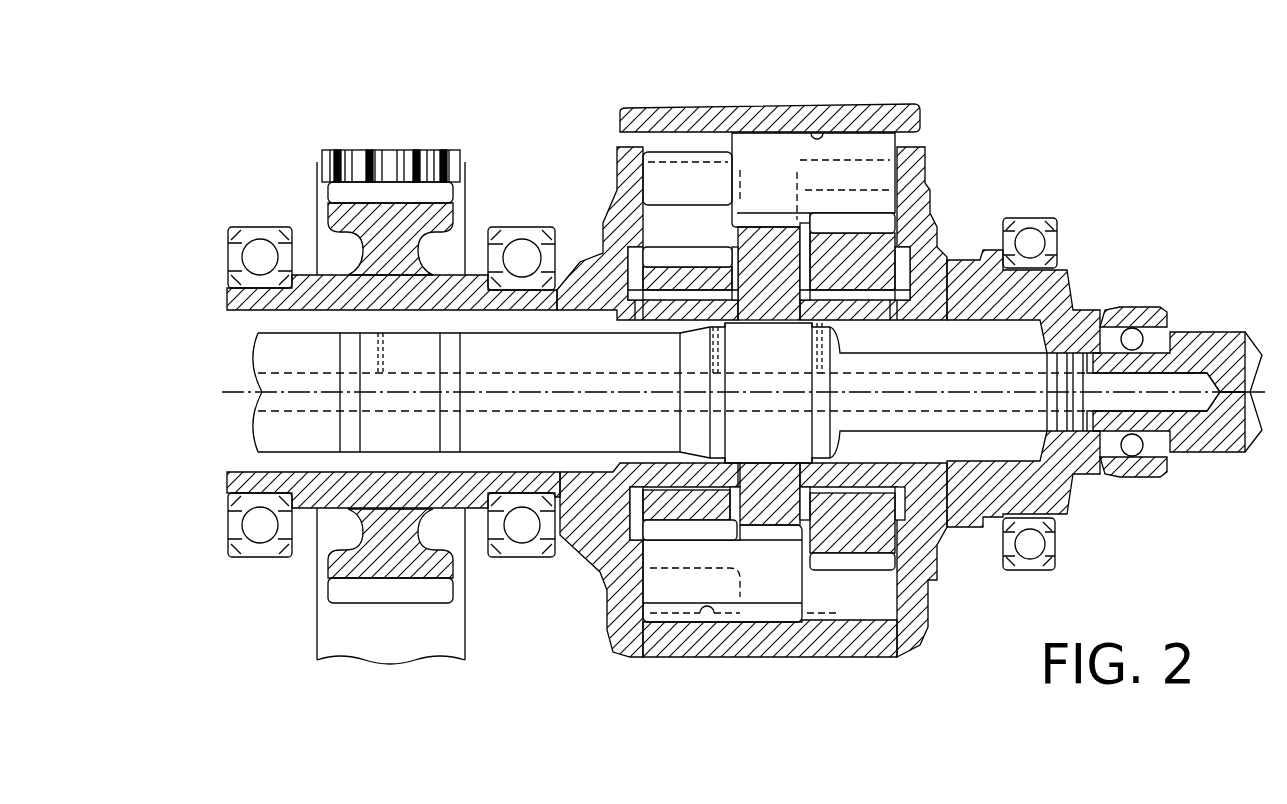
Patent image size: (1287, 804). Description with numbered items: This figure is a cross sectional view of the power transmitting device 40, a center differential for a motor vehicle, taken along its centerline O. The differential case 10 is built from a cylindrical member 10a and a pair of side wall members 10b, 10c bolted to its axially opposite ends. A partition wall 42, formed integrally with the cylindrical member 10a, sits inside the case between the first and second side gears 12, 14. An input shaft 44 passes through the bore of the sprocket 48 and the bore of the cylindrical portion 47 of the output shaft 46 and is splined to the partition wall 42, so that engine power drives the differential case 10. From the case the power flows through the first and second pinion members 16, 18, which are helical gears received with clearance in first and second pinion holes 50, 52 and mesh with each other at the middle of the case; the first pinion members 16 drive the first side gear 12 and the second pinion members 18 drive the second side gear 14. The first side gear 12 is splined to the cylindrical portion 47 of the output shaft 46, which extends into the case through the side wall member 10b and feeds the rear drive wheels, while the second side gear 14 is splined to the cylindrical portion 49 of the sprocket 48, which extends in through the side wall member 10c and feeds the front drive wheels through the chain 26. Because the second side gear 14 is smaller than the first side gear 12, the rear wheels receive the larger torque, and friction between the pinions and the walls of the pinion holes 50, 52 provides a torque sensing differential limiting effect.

The differential case 10 is at (627, 88).
The cylindrical member 10a is at (687, 118).
The side wall member 10b is at (917, 210).
The side wall member 10c is at (618, 213).
The first side gear 12 is at (855, 528).
The second side gear 14 is at (682, 508).
The first pinion member 16 is at (860, 165).
The second pinion member 18 is at (767, 587).
The chain 26 is at (330, 633).
The power transmitting device 40 is at (1118, 121).
The partition wall 42 is at (765, 245).
The input shaft 44 is at (270, 357).
The output shaft 46 is at (1193, 345).
The cylindrical portion 47 is at (927, 482).
The sprocket 48 is at (390, 555).
The cylindrical portion 49 is at (590, 483).
The first pinion hole 50 is at (820, 133).
The second pinion hole 52 is at (707, 620).
The centerline O is at (731, 393).